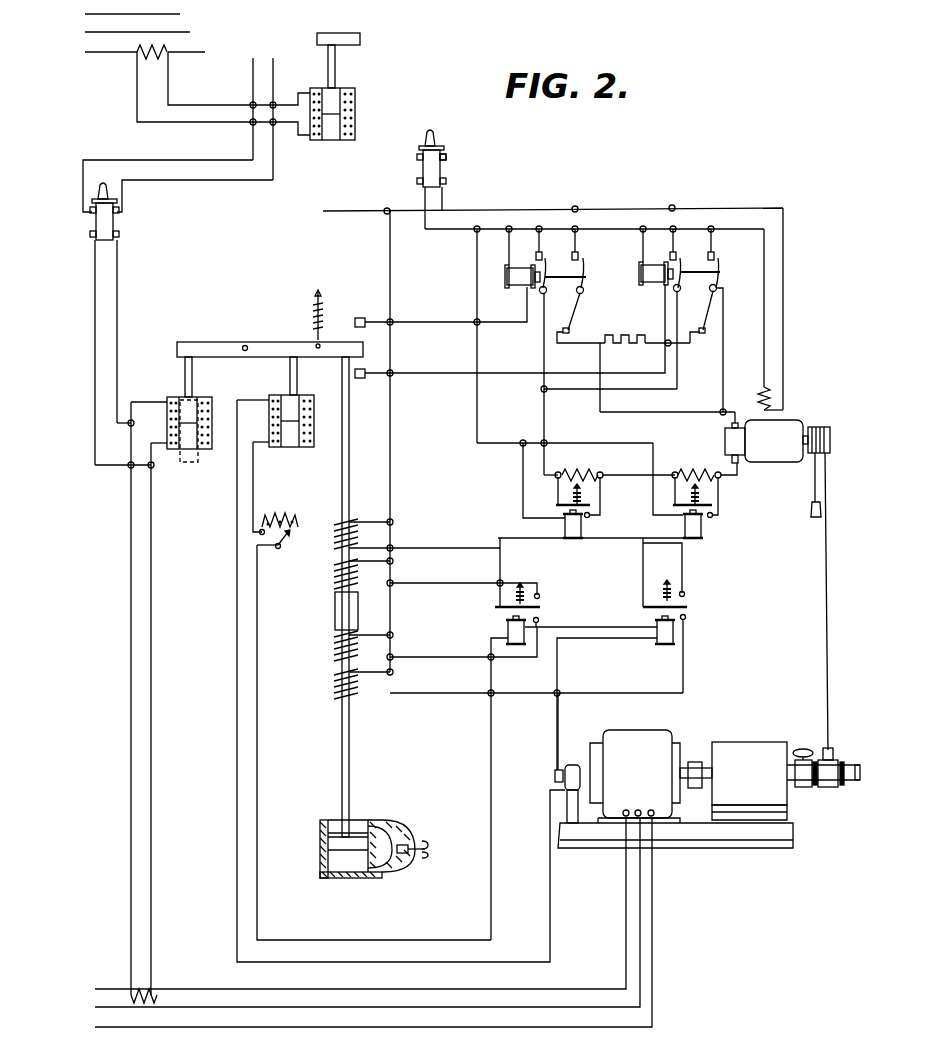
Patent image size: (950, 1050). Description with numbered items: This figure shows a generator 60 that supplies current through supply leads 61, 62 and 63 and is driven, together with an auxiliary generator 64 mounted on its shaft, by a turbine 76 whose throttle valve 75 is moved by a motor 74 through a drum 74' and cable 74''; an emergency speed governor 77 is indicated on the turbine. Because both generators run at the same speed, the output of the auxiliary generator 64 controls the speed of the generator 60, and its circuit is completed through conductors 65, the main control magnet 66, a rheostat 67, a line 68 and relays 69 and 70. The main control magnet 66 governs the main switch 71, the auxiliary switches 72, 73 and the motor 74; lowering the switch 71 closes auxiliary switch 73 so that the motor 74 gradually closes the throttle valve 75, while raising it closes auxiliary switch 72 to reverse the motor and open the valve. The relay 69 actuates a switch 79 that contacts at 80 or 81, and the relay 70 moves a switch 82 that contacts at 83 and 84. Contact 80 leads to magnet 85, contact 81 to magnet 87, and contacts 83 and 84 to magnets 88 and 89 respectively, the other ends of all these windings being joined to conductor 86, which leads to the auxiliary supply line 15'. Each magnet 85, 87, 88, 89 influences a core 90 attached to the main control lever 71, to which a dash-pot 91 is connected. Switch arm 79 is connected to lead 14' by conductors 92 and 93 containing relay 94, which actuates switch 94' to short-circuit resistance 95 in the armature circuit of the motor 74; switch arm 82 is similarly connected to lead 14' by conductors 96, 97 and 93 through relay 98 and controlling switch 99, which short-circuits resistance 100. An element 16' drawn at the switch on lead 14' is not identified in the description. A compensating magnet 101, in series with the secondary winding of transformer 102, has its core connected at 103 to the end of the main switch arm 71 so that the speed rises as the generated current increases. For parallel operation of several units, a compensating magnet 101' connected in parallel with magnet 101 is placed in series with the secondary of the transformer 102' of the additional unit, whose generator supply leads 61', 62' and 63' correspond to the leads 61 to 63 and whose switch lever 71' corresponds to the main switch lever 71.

The generator supply lead 61' is at (161, 16).
The generator supply lead 62' is at (179, 34).
The generator supply lead 63' is at (165, 66).
The transformer 102' is at (197, 90).
The compensating magnet 101' is at (365, 92).
The switch lever 71' is at (374, 29).
The lead 14' is at (553, 198).
The auxiliary supply line 15' is at (594, 184).
The switch contact 16' is at (484, 177).
The auxiliary switch 72 is at (580, 285).
The auxiliary switch 73 is at (718, 282).
The motor 74 is at (764, 437).
The drum 74' is at (827, 450).
The cable 74'' is at (804, 601).
The conductor 86 is at (392, 392).
The conductor 93 is at (477, 405).
The conductor 97 is at (600, 443).
The resistance 95 is at (583, 472).
The resistance 100 is at (702, 461).
The switch 94' is at (600, 498).
The controlling switch 99 is at (715, 510).
The relay 94 is at (597, 525).
The relay 98 is at (703, 528).
The conductor 92 is at (525, 538).
The conductor 96 is at (643, 553).
The contact 81 is at (538, 592).
The switch 79 is at (540, 605).
The contact 84 is at (684, 592).
The switch 82 is at (688, 606).
The contact 80 is at (539, 620).
The contact 83 is at (686, 618).
The relay 69 is at (506, 628).
The relay 70 is at (660, 644).
The magnet 89 is at (334, 530).
The magnet 87 is at (334, 570).
The core 90 is at (334, 612).
The magnet 85 is at (334, 648).
The magnet 88 is at (334, 685).
The main switch 71 is at (270, 322).
The connection 103 is at (188, 340).
The compensating magnet 101 is at (171, 696).
The main control magnet 66 is at (315, 430).
The rheostat 67 is at (275, 512).
The conductors 65 is at (238, 595).
The transformer 102 is at (172, 976).
The dash-pot 91 is at (322, 840).
The line 68 is at (454, 792).
The auxiliary generator 64 is at (566, 765).
The generator 60 is at (635, 776).
The turbine 76 is at (749, 781).
The emergency speed governor 77 is at (803, 749).
The throttle valve 75 is at (828, 790).
The supply lead 61 is at (361, 903).
The supply lead 62 is at (394, 912).
The supply lead 63 is at (394, 922).